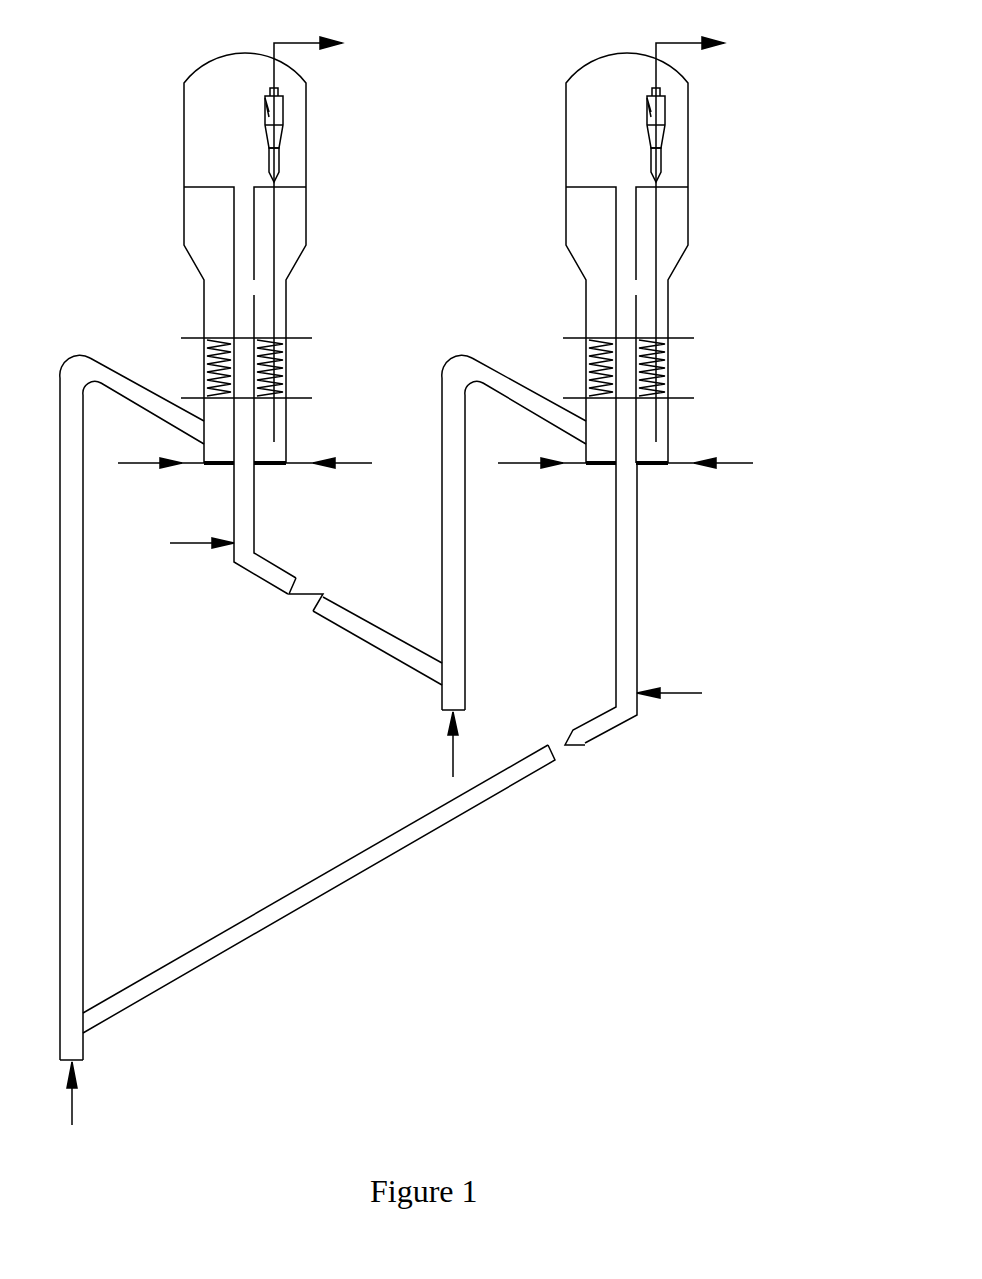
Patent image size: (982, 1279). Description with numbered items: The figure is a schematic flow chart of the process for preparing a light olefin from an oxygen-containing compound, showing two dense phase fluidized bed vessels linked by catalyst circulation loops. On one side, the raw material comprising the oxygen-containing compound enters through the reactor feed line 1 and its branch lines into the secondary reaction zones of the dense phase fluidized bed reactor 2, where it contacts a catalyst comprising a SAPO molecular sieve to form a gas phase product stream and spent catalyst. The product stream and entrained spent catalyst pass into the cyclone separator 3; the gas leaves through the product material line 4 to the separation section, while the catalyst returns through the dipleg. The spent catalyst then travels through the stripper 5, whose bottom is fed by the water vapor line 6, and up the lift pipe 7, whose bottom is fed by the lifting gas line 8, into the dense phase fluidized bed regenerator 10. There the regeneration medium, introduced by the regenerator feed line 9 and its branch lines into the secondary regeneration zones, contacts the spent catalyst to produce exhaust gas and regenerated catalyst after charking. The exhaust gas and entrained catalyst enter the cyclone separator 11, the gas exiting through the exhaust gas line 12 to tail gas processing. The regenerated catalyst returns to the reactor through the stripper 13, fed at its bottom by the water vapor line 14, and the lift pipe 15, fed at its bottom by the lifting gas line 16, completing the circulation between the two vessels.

The reactor feed line 1 is at (512, 467).
The dense phase fluidized bed reactor 2 is at (688, 207).
The cyclone separator 3 is at (665, 110).
The product material line 4 is at (665, 43).
The stripper 5 is at (637, 592).
The water vapor line 6 is at (692, 695).
The lift pipe 7 is at (83, 728).
The lifting gas line 8 is at (72, 1112).
The regenerator feed line 9 is at (132, 465).
The dense phase fluidized bed regenerator 10 is at (306, 207).
The cyclone separator 11 is at (283, 110).
The exhaust gas line 12 is at (283, 43).
The stripper 13 is at (257, 513).
The water vapor line 14 is at (182, 545).
The lift pipe 15 is at (465, 635).
The lifting gas line 16 is at (447, 768).